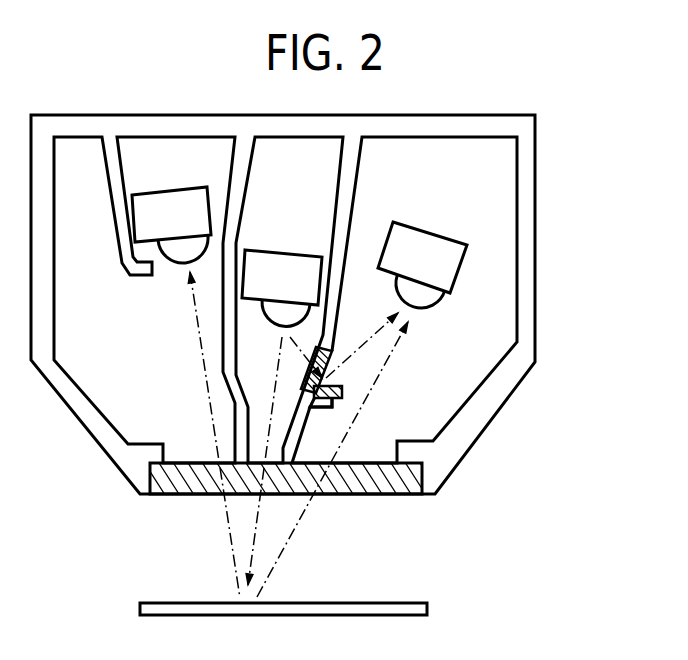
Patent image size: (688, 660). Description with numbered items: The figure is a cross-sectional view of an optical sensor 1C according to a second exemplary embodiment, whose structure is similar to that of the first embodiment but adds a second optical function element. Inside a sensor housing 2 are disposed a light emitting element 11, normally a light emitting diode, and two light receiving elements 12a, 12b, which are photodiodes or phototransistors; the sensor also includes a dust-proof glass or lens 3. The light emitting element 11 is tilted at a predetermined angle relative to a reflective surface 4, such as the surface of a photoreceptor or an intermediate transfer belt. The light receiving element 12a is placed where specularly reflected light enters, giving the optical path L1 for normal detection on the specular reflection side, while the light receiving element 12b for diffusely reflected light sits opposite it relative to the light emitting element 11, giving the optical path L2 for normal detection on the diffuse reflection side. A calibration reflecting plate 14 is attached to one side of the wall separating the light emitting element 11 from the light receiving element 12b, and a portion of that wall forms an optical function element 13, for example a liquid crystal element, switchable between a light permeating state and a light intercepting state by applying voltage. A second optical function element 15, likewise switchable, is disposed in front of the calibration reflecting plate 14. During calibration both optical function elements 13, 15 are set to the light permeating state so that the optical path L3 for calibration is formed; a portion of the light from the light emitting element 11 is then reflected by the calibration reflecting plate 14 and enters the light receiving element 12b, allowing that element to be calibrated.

The optical sensor 1C is at (329, 296).
The sensor housing 2 is at (80, 427).
The dust-proof glass or lens 3 is at (388, 497).
The reflective surface 4 is at (418, 601).
The light emitting element 11 is at (290, 260).
The light receiving element 12a is at (170, 197).
The light receiving element 12b is at (422, 236).
The optical function element 13 is at (328, 347).
The calibration reflecting plate 14 is at (333, 408).
The optical function element 15 is at (343, 392).
The optical path L1 is at (228, 533).
The optical path L2 is at (284, 548).
The optical path L3 is at (356, 360).